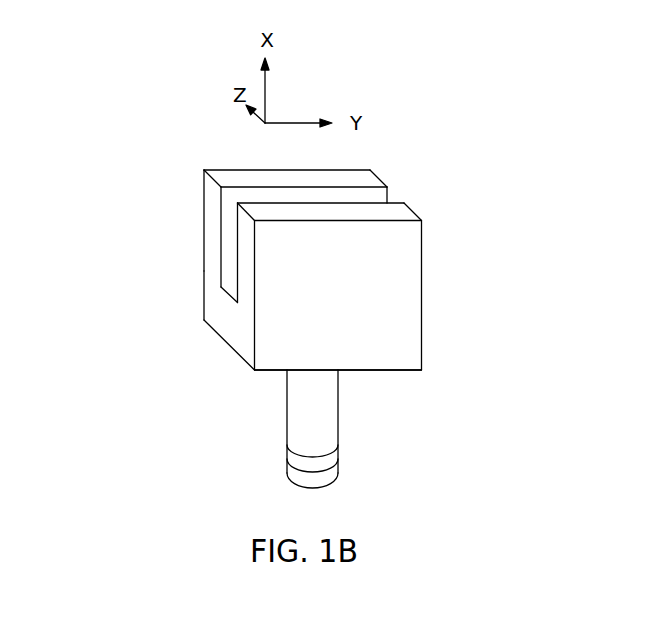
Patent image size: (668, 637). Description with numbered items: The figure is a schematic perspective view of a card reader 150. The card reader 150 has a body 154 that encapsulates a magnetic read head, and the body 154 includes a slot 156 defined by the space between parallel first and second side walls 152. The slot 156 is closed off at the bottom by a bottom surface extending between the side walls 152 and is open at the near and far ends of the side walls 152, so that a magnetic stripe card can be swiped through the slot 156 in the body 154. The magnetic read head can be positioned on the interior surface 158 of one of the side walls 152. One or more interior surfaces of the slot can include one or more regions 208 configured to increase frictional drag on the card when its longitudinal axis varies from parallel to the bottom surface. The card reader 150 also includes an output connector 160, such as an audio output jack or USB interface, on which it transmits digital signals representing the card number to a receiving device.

The card reader 150 is at (545, 95).
The side wall 152 is at (370, 175).
The body 154 is at (403, 295).
The slot 156 is at (223, 281).
The interior surface 158 is at (229, 212).
The output connector 160 is at (320, 411).
The region 208 is at (231, 282).